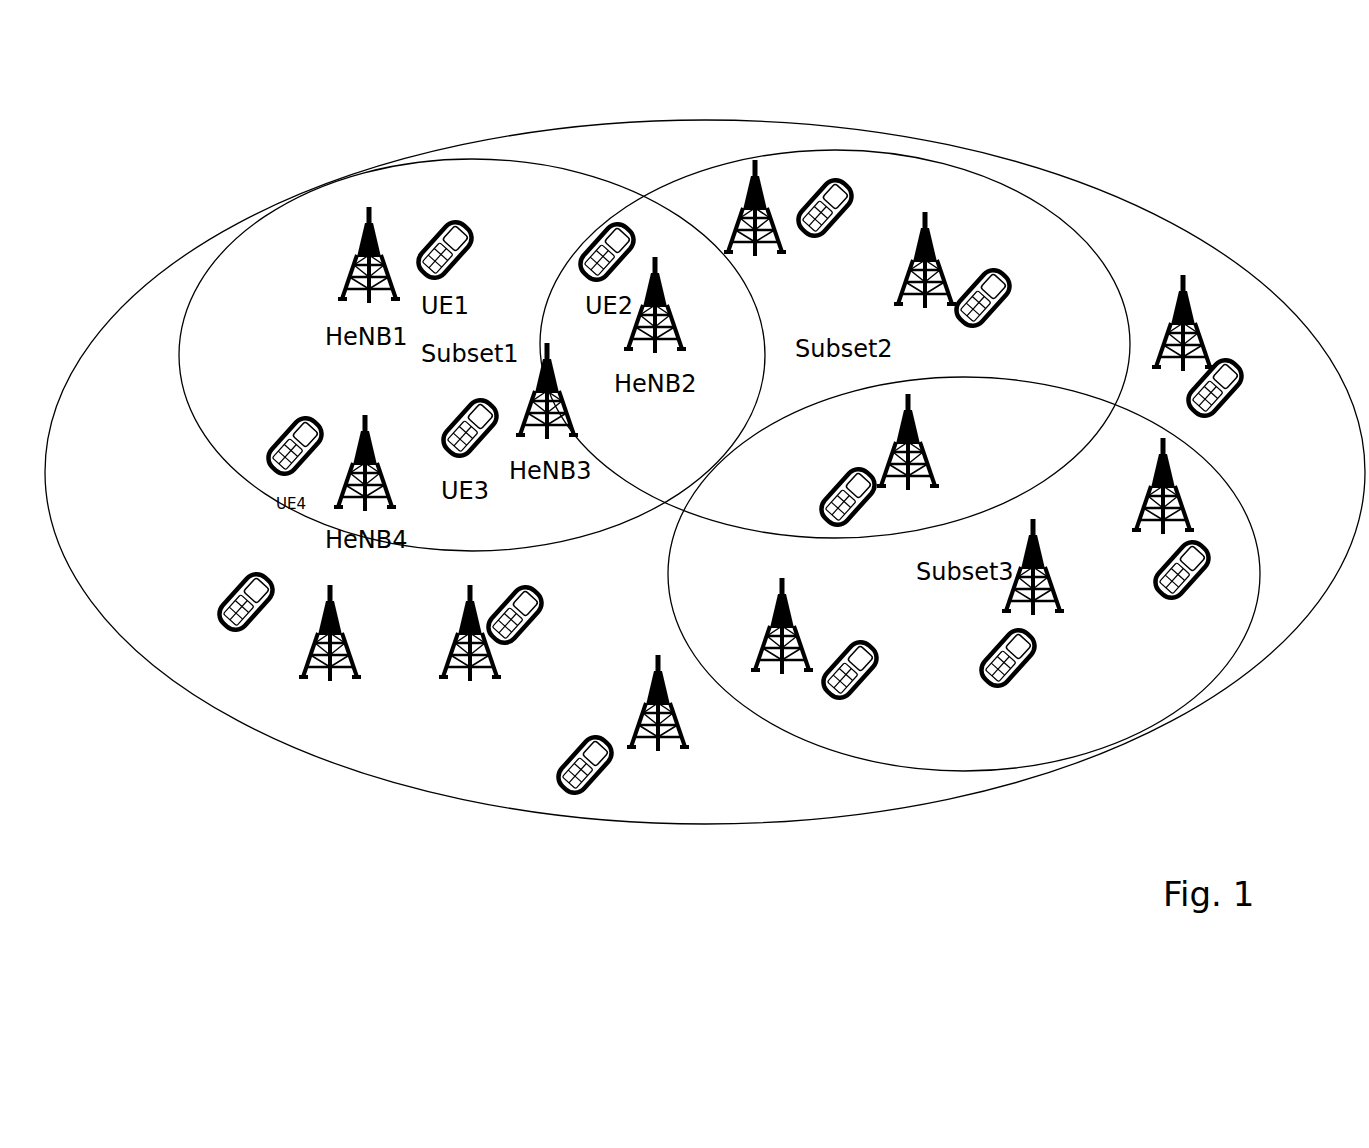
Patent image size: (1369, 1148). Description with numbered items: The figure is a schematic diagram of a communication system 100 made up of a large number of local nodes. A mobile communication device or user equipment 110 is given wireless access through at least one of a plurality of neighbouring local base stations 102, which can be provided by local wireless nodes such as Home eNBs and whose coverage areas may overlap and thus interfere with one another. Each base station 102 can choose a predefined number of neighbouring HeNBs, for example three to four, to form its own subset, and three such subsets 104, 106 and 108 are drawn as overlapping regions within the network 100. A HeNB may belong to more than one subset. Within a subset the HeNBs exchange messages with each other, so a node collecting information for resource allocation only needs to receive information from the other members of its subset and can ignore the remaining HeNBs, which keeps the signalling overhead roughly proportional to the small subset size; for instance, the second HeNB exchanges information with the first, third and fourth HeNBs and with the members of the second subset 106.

The communication system 100 is at (152, 276).
The local base station 102 is at (343, 683).
The first subset 104 is at (325, 207).
The second subset 106 is at (965, 222).
The third subset 108 is at (1150, 680).
The user equipment 110 is at (228, 592).